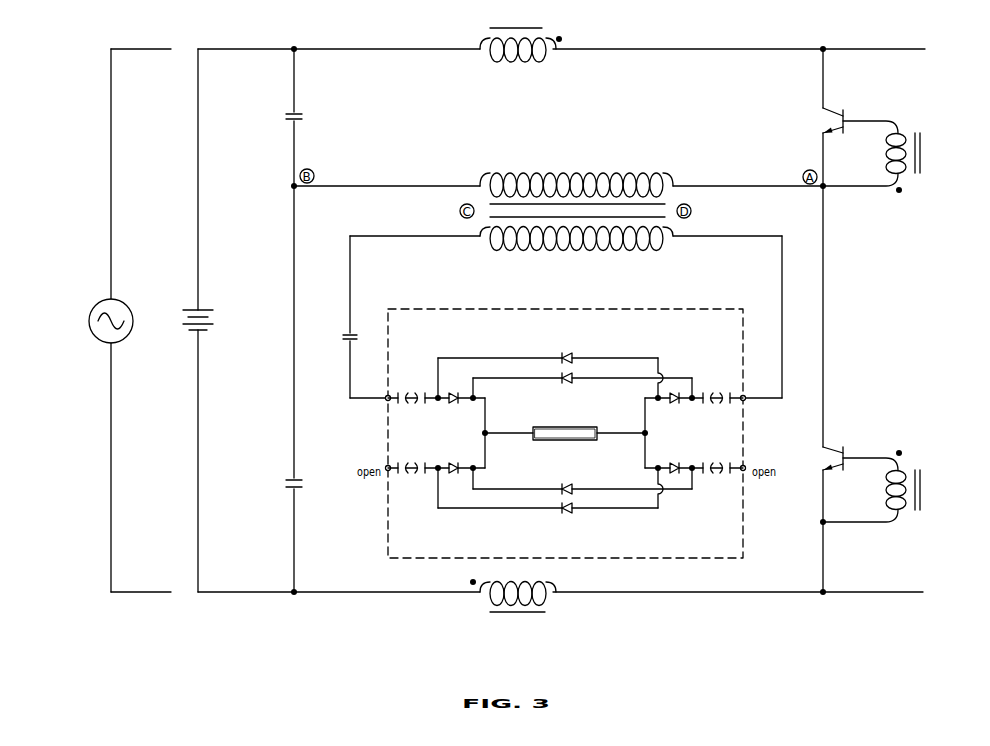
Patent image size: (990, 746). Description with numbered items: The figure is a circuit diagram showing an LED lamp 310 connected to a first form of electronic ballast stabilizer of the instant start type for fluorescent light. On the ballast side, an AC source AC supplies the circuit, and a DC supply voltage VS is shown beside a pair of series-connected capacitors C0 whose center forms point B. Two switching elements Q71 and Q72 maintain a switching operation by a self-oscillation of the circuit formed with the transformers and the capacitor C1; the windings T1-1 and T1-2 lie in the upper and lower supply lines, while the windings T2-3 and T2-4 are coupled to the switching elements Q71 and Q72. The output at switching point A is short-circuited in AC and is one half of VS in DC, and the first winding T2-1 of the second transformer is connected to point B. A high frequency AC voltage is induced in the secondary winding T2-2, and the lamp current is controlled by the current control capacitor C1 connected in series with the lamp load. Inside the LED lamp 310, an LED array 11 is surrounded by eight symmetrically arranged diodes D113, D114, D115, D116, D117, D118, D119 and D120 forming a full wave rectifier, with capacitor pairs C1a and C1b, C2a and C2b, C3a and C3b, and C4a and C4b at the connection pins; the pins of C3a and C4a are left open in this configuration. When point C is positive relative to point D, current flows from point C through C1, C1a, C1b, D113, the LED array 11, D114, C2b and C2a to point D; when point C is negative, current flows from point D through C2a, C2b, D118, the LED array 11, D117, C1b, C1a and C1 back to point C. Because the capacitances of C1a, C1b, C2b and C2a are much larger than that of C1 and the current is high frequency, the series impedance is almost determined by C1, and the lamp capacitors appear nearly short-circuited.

The LED array 11 is at (583, 427).
The LED lamp 310 is at (706, 309).
The AC power source AC is at (117, 320).
The DC voltage Vs VS is at (191, 320).
The capacitor C0 is at (303, 320).
The current control capacitor C1 is at (355, 317).
The first winding of transformer T1 T1-1 is at (521, 37).
The second winding of transformer T1 T1-2 is at (513, 604).
The first winding of transformer T2 T2-1 is at (558, 177).
The secondary winding of transformer T2 T2-2 is at (566, 249).
The winding of transformer T2 T2-3 is at (890, 157).
The winding of transformer T2 T2-4 is at (890, 486).
The switching element Q71 is at (816, 120).
The switching element Q72 is at (816, 458).
The diode D113 is at (461, 391).
The diode D114 is at (669, 391).
The diode D115 is at (461, 460).
The diode D116 is at (669, 460).
The diode D117 is at (548, 351).
The diode D118 is at (582, 387).
The diode D119 is at (582, 481).
The diode D120 is at (548, 517).
The capacitor C1a is at (413, 391).
The capacitor C1b is at (424, 386).
The capacitor C2a is at (730, 386).
The capacitor C2b is at (718, 391).
The capacitor C3a is at (413, 478).
The capacitor C3b is at (424, 487).
The capacitor C4a is at (730, 487).
The capacitor C4b is at (718, 478).